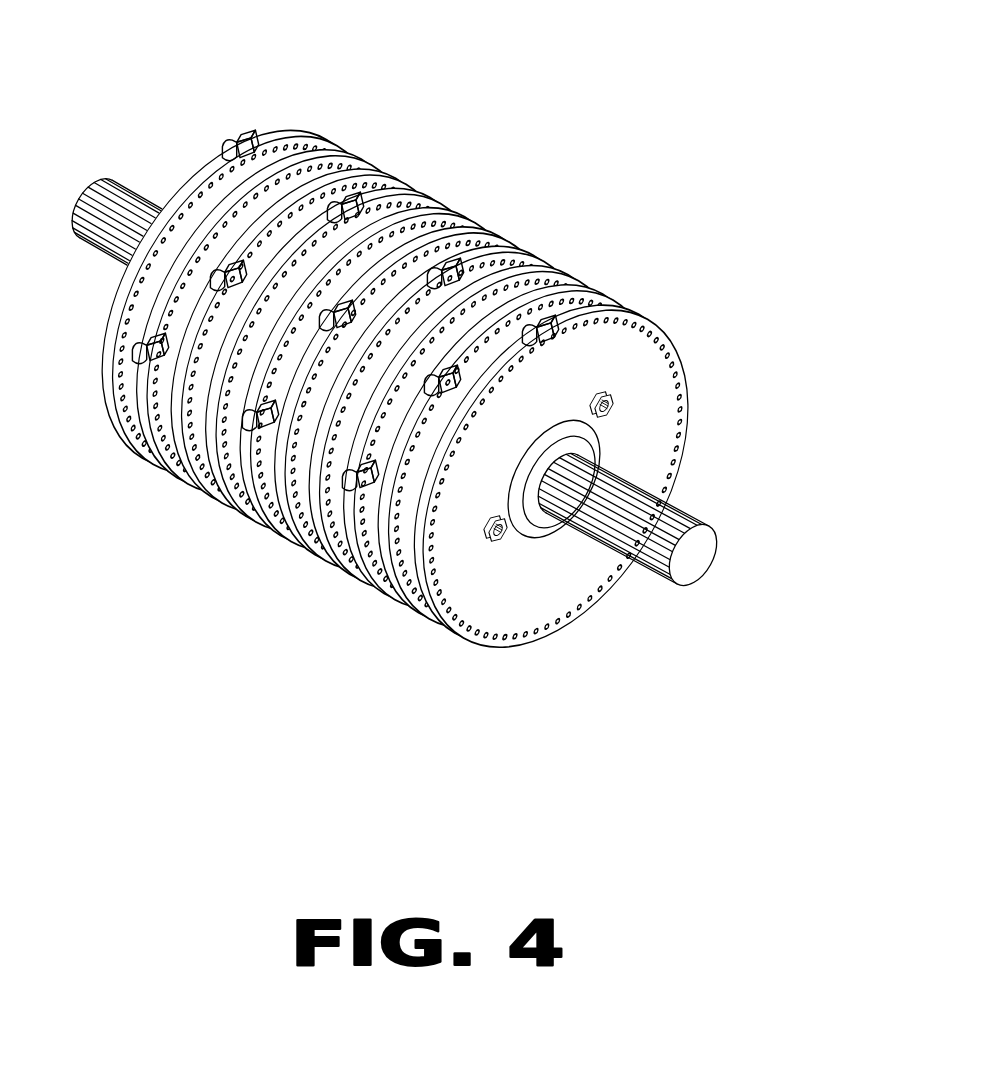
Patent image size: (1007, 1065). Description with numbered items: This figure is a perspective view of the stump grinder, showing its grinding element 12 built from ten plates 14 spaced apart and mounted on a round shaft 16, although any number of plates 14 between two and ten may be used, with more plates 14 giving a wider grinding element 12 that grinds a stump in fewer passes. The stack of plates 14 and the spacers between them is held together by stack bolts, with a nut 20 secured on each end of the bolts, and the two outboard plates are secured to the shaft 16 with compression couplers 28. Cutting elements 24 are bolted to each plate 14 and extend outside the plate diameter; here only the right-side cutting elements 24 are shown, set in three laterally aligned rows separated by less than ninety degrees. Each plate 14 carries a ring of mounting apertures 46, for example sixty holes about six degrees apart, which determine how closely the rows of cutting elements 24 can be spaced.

The grinding element 12 is at (455, 110).
The plate 14 is at (287, 112).
The shaft 16 is at (112, 181).
The nut 20 is at (478, 541).
The cutting element 24 is at (352, 492).
The compression coupler 28 is at (537, 508).
The mounting aperture 46 is at (680, 442).